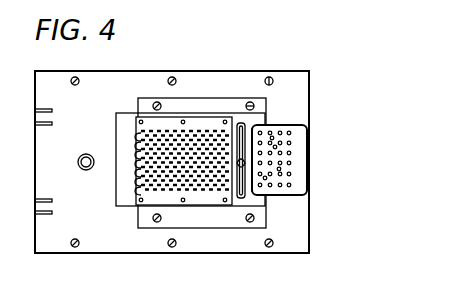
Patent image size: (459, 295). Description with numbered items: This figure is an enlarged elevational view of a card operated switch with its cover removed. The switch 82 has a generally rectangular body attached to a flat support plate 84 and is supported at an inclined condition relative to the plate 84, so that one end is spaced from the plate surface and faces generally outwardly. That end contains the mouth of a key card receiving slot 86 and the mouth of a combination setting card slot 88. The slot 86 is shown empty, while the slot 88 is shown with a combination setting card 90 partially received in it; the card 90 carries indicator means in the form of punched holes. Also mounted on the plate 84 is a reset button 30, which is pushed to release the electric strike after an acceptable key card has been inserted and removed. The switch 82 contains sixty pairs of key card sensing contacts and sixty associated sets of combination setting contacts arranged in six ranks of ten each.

The reset button 30 is at (85, 153).
The switch 82 is at (196, 118).
The support plate 84 is at (291, 79).
The key card receiving slot 86 is at (243, 198).
The combination setting card slot 88 is at (256, 126).
The combination setting card 90 is at (298, 164).